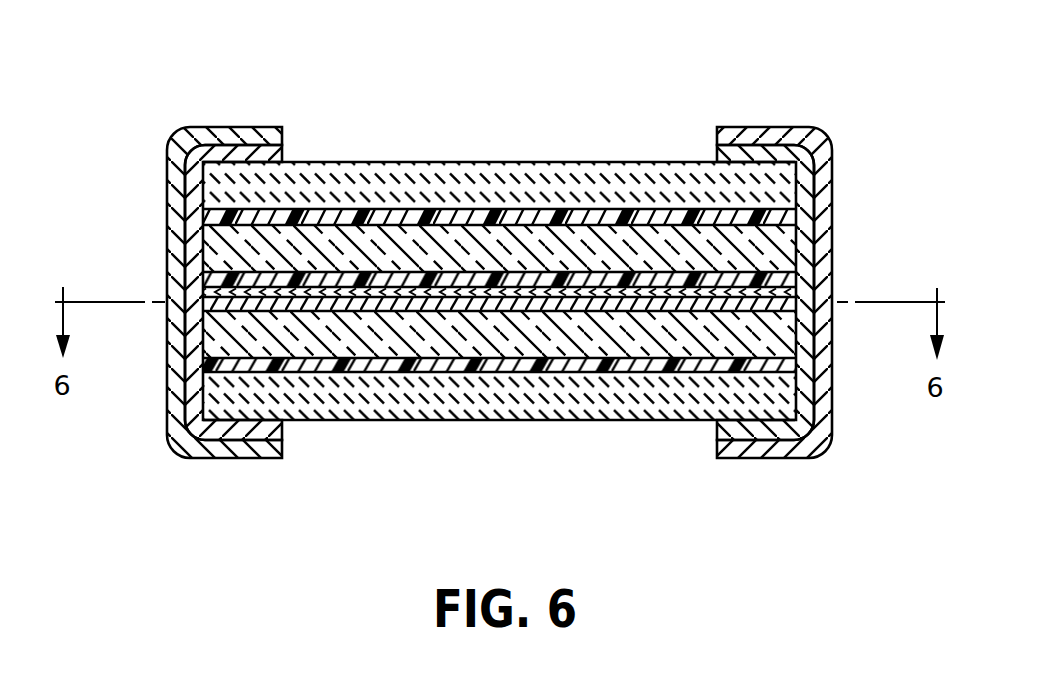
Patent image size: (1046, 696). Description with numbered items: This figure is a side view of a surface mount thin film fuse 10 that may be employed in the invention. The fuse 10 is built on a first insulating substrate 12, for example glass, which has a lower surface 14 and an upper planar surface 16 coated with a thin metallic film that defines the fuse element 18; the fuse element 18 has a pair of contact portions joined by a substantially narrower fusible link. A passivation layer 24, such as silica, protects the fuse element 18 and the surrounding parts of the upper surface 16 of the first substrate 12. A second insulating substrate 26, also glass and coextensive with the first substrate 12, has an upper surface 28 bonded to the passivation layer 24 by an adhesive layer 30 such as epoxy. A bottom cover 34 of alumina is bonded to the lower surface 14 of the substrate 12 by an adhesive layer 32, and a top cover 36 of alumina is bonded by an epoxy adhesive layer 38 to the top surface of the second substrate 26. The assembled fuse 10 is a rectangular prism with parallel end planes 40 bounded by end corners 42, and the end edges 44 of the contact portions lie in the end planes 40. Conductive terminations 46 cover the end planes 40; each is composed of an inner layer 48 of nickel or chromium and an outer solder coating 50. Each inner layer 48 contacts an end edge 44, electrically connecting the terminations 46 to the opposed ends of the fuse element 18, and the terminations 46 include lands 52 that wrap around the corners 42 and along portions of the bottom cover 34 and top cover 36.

The thin film fuse 10 is at (609, 72).
The first insulating substrate 12 is at (407, 340).
The lower surface 14 is at (353, 375).
The upper planar surface 16 is at (765, 292).
The fuse element 18 is at (650, 303).
The passivation layer 24 is at (332, 288).
The second insulating substrate 26 is at (405, 240).
The upper surface 28 is at (633, 222).
The adhesive layer 30 is at (452, 270).
The adhesive layer 32 is at (483, 367).
The bottom cover 34 is at (567, 422).
The top cover 36 is at (660, 163).
The adhesive layer 38 is at (517, 215).
The end planes 40 is at (187, 250).
The end corners 42 is at (172, 133).
The end edges 44 is at (197, 303).
The conductive terminations 46 is at (167, 178).
The inner layer 48 is at (252, 130).
The outer solder coating 50 is at (823, 377).
The lands 52 is at (269, 127).